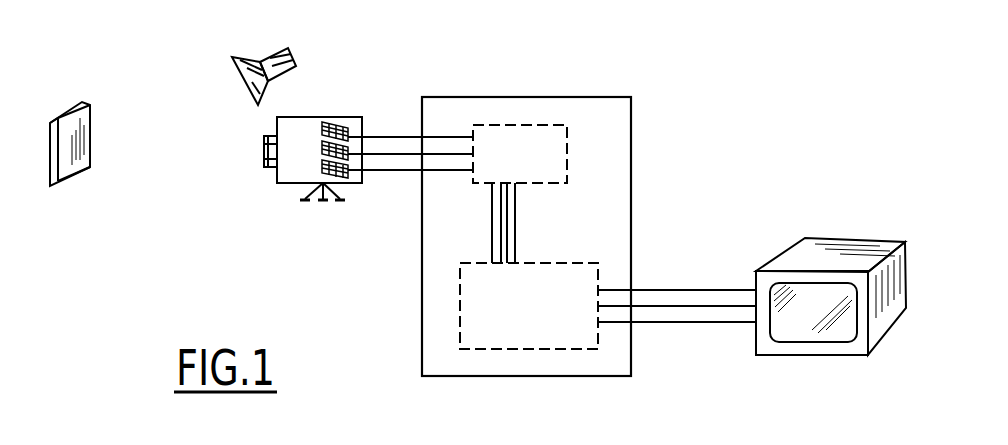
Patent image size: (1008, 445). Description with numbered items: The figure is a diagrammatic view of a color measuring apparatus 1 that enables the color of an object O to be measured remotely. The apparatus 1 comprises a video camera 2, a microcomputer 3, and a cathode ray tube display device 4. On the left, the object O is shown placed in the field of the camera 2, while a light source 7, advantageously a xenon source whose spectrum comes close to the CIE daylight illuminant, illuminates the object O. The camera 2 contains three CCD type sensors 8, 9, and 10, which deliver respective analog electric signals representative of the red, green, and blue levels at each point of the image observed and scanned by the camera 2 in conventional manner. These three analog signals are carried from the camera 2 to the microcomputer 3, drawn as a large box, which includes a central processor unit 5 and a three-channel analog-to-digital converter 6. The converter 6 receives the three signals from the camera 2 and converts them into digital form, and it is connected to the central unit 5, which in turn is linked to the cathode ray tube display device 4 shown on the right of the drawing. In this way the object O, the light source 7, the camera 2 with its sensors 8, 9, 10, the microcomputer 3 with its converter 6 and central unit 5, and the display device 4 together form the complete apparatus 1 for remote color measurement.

The object O is at (70, 165).
The apparatus 1 is at (655, 163).
The video camera 2 is at (298, 117).
The microcomputer 3 is at (422, 304).
The cathode ray tube display device 4 is at (765, 288).
The central processor unit 5 is at (540, 335).
The three-channel analog-to-digital converter 6 is at (503, 146).
The light source 7 is at (275, 61).
The CCD type sensor 8 is at (345, 125).
The CCD type sensor 9 is at (322, 146).
The CCD type sensor 10 is at (348, 178).